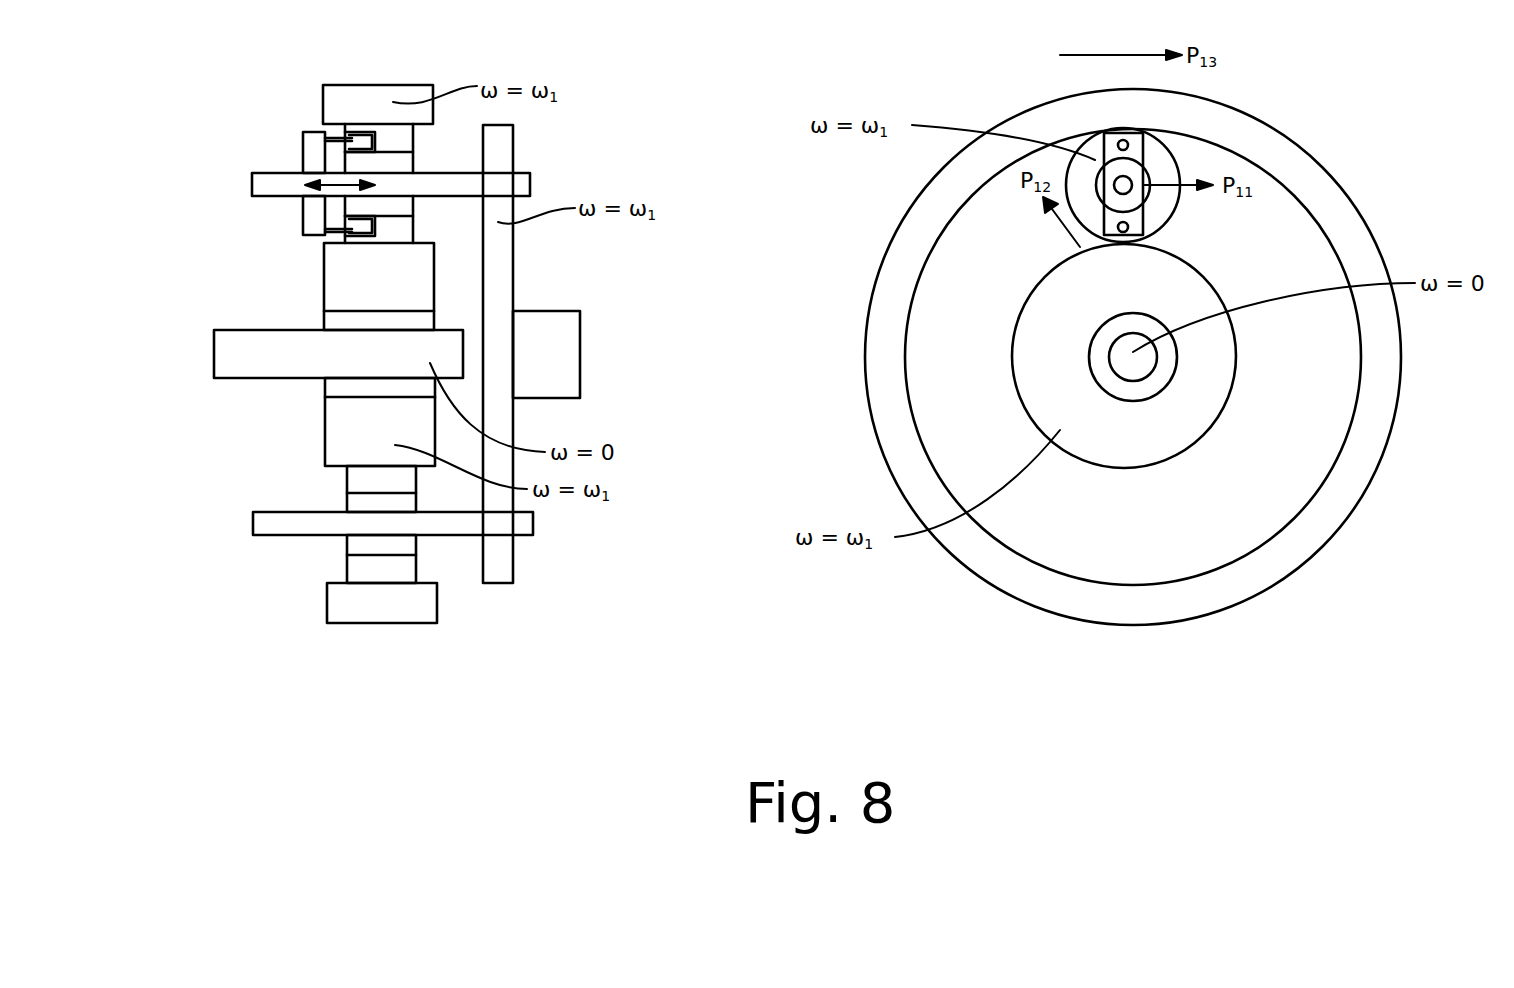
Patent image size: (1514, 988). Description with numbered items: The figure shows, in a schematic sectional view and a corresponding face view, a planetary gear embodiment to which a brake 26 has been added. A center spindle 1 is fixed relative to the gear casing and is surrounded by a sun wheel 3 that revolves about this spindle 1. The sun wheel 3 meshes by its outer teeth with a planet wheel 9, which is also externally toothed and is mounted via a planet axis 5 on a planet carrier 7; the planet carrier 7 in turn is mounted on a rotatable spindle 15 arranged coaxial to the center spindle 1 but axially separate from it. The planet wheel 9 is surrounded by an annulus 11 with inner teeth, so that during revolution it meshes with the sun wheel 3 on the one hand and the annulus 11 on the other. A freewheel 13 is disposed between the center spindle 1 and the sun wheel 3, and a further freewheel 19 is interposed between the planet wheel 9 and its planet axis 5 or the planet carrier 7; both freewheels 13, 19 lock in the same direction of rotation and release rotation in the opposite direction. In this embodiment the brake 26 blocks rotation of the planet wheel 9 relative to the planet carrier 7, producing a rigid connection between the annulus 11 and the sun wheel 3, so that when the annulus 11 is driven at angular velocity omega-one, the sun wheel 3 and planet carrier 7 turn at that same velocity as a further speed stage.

The center spindle 1 is at (232, 355).
The sun wheel 3 is at (337, 280).
The planet axis 5 is at (267, 185).
The planet carrier 7 is at (498, 263).
The planet wheel 9 is at (400, 140).
The annulus 11 is at (342, 103).
The freewheel 13 is at (342, 388).
The rotatable spindle 15 is at (558, 357).
The freewheel 19 is at (400, 163).
The brake 26 is at (312, 148).